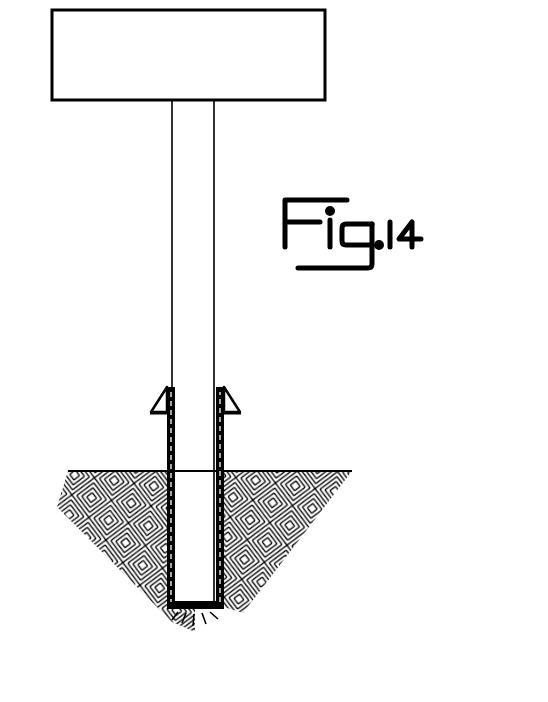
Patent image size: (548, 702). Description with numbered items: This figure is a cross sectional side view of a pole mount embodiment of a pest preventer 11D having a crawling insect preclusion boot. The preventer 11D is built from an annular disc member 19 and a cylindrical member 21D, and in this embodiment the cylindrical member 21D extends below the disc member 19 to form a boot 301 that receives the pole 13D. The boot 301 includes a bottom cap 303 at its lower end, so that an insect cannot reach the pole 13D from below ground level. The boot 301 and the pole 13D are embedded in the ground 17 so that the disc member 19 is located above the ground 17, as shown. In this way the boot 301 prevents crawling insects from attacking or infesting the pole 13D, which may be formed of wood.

The pole 13D is at (190, 243).
The preventer 11D is at (225, 472).
The annular disc member 19 is at (242, 411).
The cylindrical member 21D is at (226, 436).
The ground 17 is at (95, 483).
The boot 301 is at (194, 626).
The bottom cap 303 is at (222, 609).